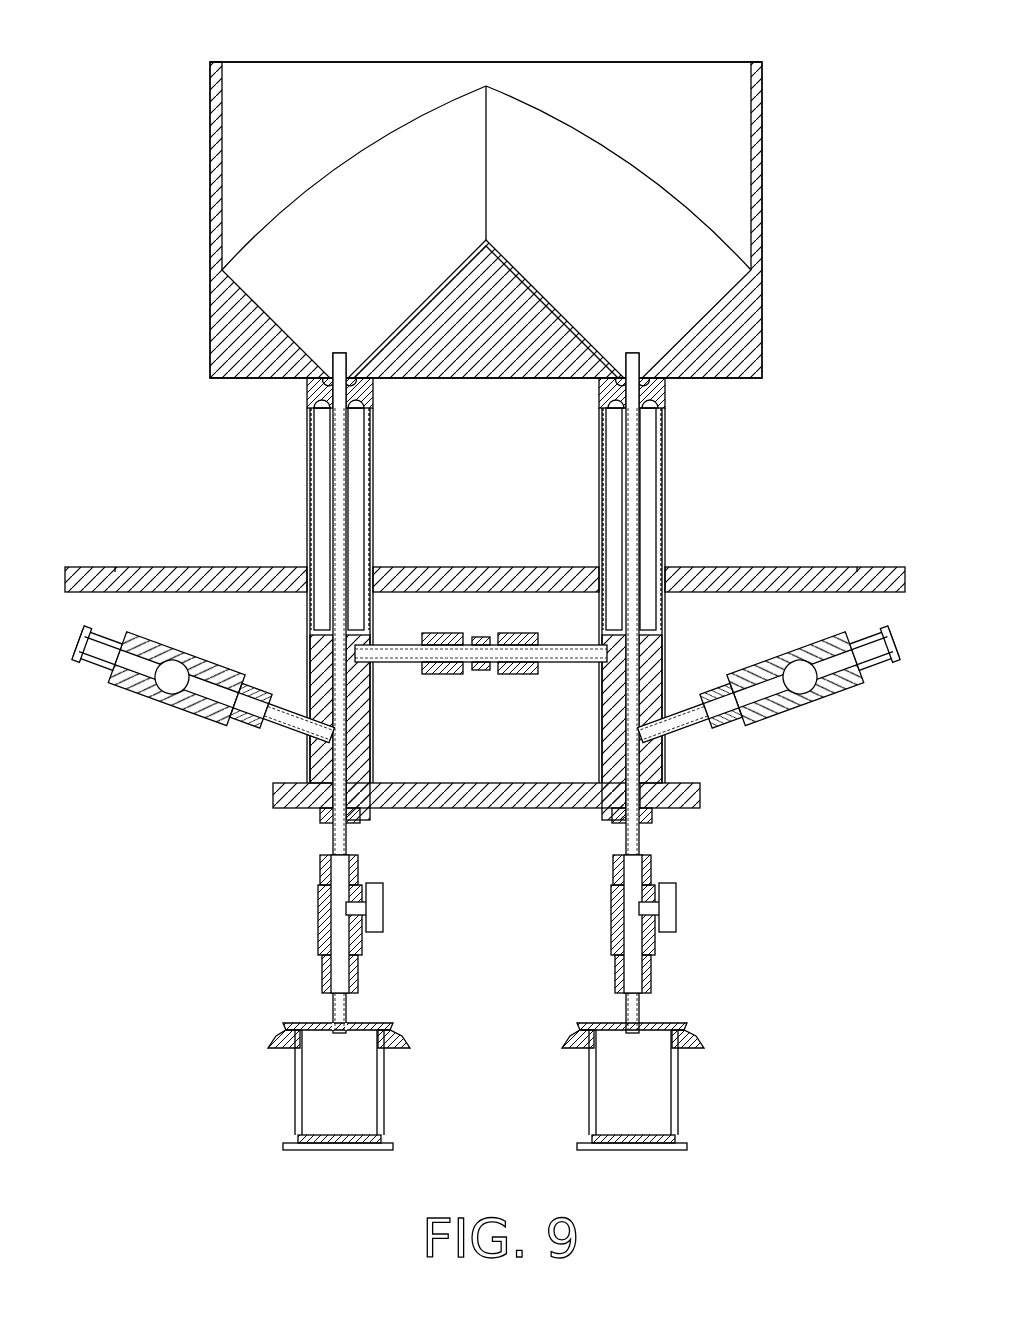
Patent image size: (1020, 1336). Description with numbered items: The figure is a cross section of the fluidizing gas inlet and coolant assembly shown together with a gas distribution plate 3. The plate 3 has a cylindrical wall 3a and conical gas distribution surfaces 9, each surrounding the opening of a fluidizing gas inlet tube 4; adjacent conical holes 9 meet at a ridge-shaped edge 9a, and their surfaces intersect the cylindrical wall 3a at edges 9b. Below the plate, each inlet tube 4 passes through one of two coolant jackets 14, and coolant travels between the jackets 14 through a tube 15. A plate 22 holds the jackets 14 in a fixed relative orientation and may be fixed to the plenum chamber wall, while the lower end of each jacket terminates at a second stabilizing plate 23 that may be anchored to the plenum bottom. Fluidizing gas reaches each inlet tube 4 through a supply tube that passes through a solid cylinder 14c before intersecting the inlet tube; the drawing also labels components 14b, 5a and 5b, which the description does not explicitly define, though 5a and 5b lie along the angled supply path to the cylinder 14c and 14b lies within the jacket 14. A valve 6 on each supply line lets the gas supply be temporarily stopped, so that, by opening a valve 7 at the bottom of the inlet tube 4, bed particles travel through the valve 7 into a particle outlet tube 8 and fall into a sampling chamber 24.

The gas distribution plate 3 is at (762, 240).
The cylindrical wall 3a is at (762, 122).
The conical gas distribution surface 9 is at (400, 327).
The ridge-shaped edge 9a is at (486, 157).
The edge 9b is at (486, 86).
The coolant jacket 14 is at (307, 466).
The inner sleeve 14b is at (364, 450).
The solid cylinder 14c is at (307, 655).
The fluidizing gas inlet tube 4 is at (350, 508).
The plate 22 is at (878, 567).
The second stabilizing plate 23 is at (700, 798).
The tube 15 is at (555, 663).
The inlet connector 5a is at (90, 672).
The feed pipe 5b is at (270, 732).
The valve 6 is at (160, 700).
The valve 7 is at (383, 907).
The particle outlet tube 8 is at (350, 995).
The sampling chamber 24 is at (590, 1088).